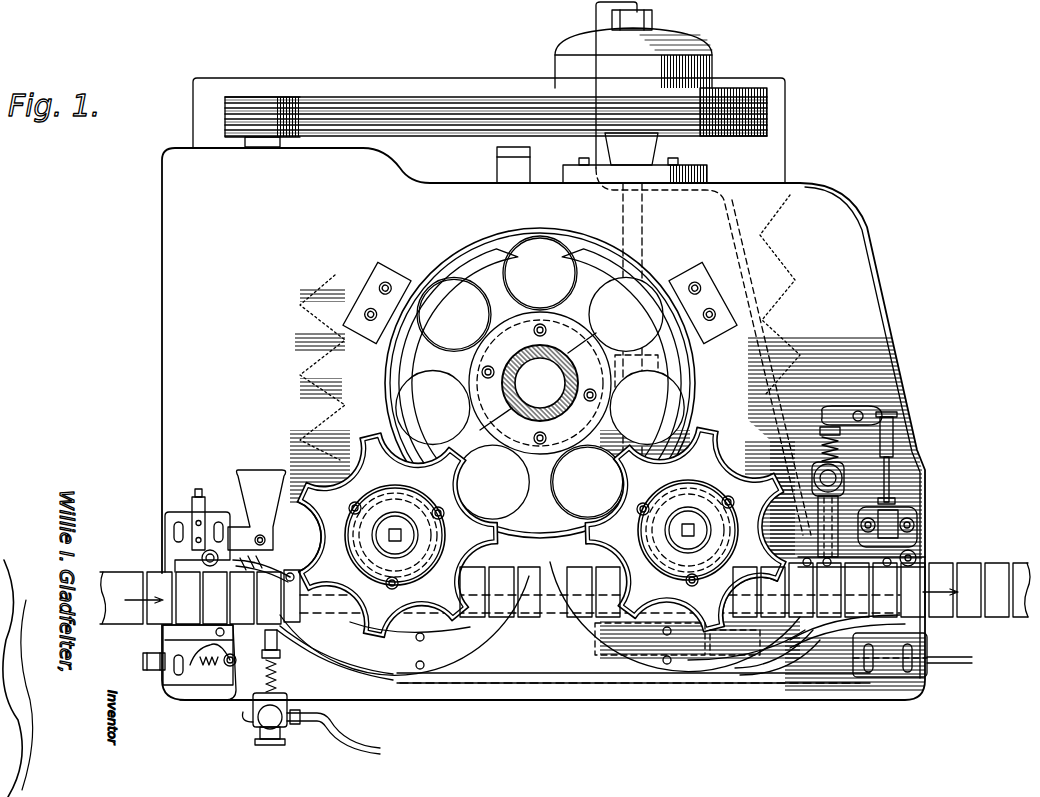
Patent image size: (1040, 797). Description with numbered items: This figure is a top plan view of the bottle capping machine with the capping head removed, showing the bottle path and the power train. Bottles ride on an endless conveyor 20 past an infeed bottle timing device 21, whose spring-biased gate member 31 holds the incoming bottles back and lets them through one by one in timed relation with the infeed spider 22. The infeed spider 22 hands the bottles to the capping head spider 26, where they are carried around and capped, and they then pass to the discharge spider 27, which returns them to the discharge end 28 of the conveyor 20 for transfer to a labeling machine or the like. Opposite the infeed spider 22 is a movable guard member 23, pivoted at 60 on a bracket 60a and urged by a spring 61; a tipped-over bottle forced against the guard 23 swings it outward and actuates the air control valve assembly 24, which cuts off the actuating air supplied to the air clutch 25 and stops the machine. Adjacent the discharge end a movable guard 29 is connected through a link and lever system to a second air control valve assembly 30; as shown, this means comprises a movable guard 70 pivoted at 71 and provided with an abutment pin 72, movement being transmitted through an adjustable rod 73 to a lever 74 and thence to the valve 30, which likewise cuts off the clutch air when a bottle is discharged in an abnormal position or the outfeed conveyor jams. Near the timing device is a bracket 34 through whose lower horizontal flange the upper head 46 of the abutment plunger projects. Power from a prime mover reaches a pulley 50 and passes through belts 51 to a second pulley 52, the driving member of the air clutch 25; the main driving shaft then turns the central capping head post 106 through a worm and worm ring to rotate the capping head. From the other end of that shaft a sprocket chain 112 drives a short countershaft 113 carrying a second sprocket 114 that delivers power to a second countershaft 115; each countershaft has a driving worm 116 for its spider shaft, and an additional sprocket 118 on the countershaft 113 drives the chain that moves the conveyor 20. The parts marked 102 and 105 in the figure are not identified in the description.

The endless conveyor 20 is at (136, 580).
The infeed bottle timing device 21 is at (205, 542).
The infeed spider 22 is at (459, 612).
The movable guard member 23 is at (383, 672).
The air control valve assembly 24 is at (267, 717).
The air clutch 25 is at (682, 43).
The capping head spider 26 is at (488, 340).
The discharge spider 27 is at (703, 440).
The discharge end of the conveyor 28 is at (795, 640).
The movable guard 29 is at (775, 548).
The second air control valve assembly 30 is at (838, 470).
The gate member 31 is at (292, 572).
The bracket 34 is at (183, 512).
The upper head 46 is at (260, 536).
The pulley 50 is at (257, 95).
The belts 51 is at (372, 100).
The second pulley 52 is at (757, 88).
The pivot 60 is at (220, 636).
The bracket 60a is at (168, 678).
The spring 61 is at (200, 660).
The movable guard 70 is at (857, 565).
The pivot 71 is at (916, 557).
The abutment pin 72 is at (917, 530).
The adjustable rod 73 is at (893, 470).
The lever 74 is at (878, 410).
The turret 102 is at (455, 395).
The pocket 105 is at (570, 502).
The central capping head post 106 is at (525, 343).
The sprocket chain 112 is at (647, 663).
The short countershaft 113 is at (733, 627).
The second sprocket 114 is at (770, 700).
The second countershaft 115 is at (357, 623).
The driving worm 116 is at (750, 452).
The additional sprocket 118 is at (742, 667).